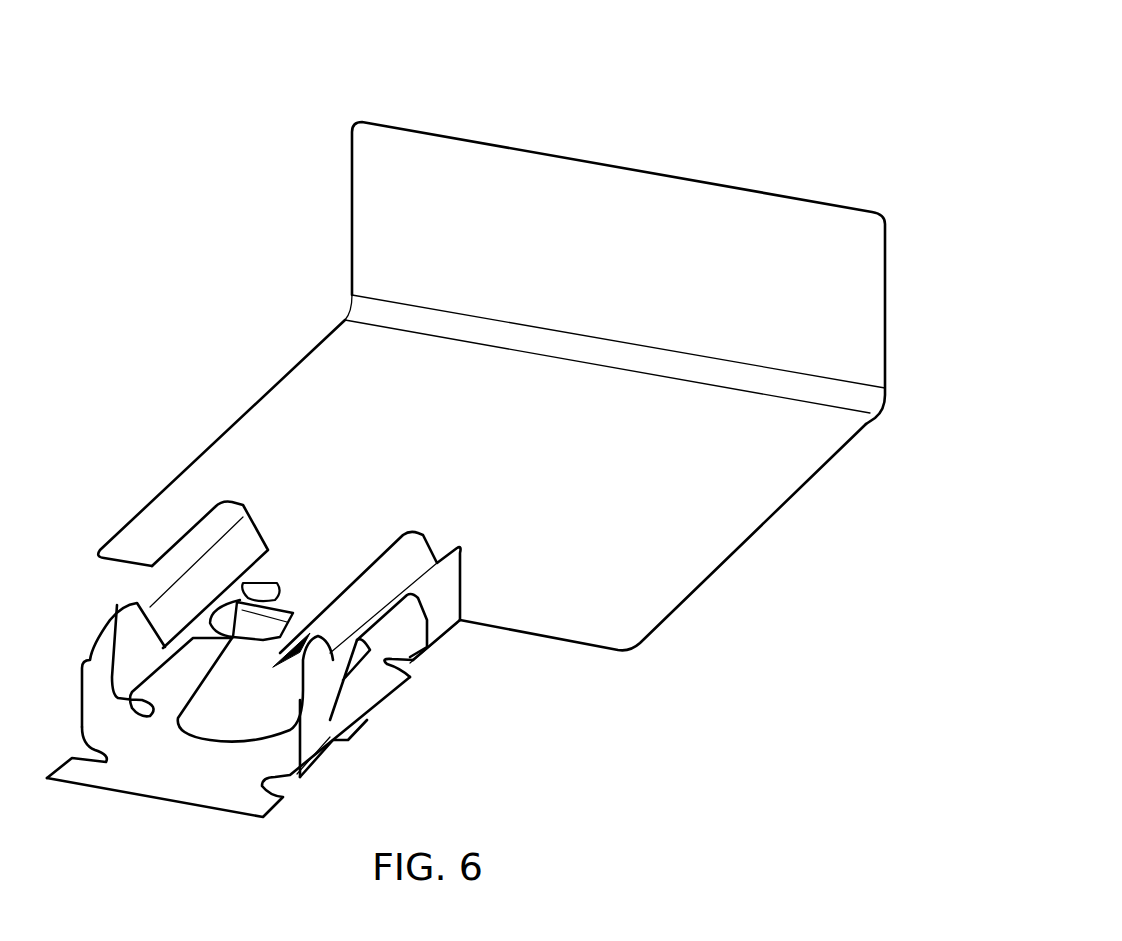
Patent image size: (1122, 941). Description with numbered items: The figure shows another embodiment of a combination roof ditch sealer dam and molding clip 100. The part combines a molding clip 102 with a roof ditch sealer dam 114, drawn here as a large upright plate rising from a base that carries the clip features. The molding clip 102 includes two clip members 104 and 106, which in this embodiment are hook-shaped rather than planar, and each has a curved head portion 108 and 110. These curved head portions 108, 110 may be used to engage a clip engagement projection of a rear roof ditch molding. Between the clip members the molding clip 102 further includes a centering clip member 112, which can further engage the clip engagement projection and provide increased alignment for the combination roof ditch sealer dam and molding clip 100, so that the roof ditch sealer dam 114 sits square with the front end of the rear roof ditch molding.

The combination roof ditch sealer dam and molding clip 100 is at (724, 124).
The molding clip 102 is at (167, 787).
The clip member 104 is at (92, 662).
The clip member 106 is at (437, 627).
The curved head portion 108 is at (233, 517).
The curved head portion 110 is at (420, 540).
The centering clip member 112 is at (292, 606).
The roof ditch sealer dam 114 is at (870, 298).